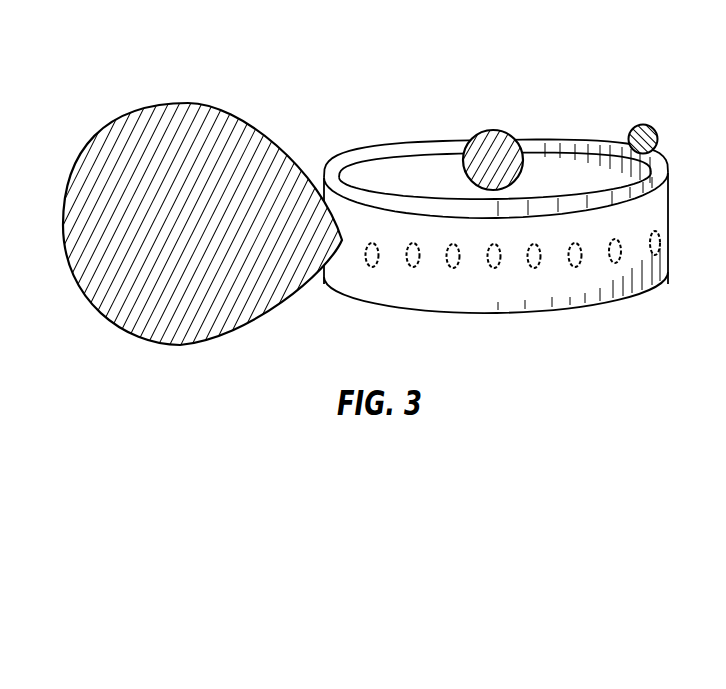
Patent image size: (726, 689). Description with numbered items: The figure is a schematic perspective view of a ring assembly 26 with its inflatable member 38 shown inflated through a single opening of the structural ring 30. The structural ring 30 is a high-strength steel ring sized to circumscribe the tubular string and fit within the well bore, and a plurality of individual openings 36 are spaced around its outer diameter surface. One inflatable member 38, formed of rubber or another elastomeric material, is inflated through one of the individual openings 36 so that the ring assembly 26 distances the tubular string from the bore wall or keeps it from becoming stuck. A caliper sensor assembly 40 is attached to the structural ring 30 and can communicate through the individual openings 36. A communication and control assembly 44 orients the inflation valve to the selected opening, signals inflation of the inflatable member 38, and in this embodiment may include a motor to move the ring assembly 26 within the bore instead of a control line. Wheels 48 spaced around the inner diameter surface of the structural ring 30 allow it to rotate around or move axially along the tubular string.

The ring assembly 26 is at (353, 323).
The structural ring 30 is at (430, 297).
The individual openings 36 is at (575, 248).
The inflatable member 38 is at (186, 103).
The caliper sensor assembly 40 is at (668, 179).
The communication and control assembly 44 is at (652, 127).
The wheels 48 is at (494, 130).